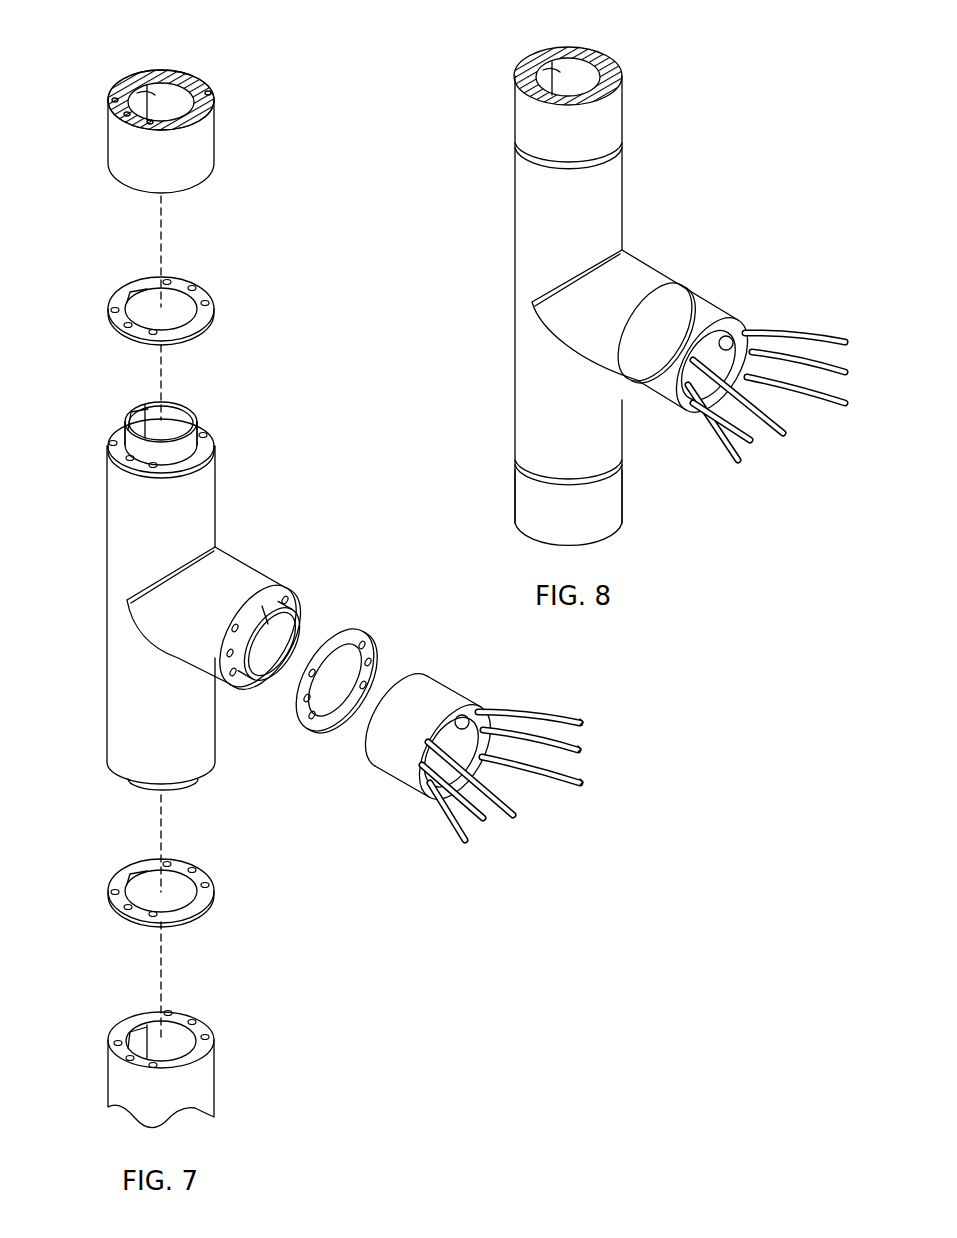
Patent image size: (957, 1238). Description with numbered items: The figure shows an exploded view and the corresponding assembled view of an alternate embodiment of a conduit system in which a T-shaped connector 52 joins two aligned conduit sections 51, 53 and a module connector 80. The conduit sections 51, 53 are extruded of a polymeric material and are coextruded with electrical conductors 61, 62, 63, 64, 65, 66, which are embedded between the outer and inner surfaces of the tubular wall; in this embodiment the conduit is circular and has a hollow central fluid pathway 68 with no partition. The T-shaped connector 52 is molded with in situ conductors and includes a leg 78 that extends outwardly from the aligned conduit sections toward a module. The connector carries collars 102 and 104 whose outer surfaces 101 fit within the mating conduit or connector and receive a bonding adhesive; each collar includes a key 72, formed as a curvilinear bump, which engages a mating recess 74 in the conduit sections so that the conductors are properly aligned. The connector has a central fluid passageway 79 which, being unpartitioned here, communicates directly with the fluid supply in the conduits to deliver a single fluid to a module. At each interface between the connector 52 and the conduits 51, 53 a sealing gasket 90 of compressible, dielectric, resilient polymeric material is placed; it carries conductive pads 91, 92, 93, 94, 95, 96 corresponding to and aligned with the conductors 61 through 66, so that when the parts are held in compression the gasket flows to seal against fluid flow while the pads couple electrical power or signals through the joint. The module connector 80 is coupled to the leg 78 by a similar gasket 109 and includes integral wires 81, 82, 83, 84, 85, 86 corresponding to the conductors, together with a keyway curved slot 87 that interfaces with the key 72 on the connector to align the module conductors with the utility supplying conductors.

In FIG. 7, the conduit section 51 is at (208, 1078).
In FIG. 8, the conduit section 51 is at (525, 505).
In FIG. 7, the T-shaped connector 52 is at (220, 517).
In FIG. 8, the T-shaped connector 52 is at (623, 213).
In FIG. 7, the conduit section 53 is at (200, 152).
In FIG. 8, the conduit section 53 is at (608, 118).
In FIG. 7, the electrical conductor 61 is at (178, 78).
In FIG. 7, the electrical conductor 62 is at (195, 80).
In FIG. 7, the electrical conductor 63 is at (210, 92).
In FIG. 7, the electrical conductor 64 is at (135, 120).
In FIG. 7, the electrical conductor 65 is at (125, 112).
In FIG. 7, the electrical conductor 66 is at (115, 98).
In FIG. 7, the hollow central fluid pathway 68 is at (185, 72).
In FIG. 8, the hollow central fluid pathway 68 is at (587, 82).
In FIG. 7, the keyway 72 is at (128, 410).
In FIG. 7, the mating recess 74 is at (142, 78).
In FIG. 8, the mating recess 74 is at (553, 50).
In FIG. 7, the leg 78 is at (185, 633).
In FIG. 8, the leg 78 is at (610, 335).
In FIG. 7, the central fluid passageway 79 is at (163, 412).
In FIG. 8, the central fluid passageway 79 is at (580, 77).
In FIG. 7, the module connector 80 is at (410, 765).
In FIG. 8, the module connector 80 is at (668, 382).
In FIG. 7, the integral wire 81 is at (540, 715).
In FIG. 8, the integral wire 81 is at (808, 332).
In FIG. 7, the integral wire 82 is at (545, 760).
In FIG. 8, the integral wire 82 is at (813, 372).
In FIG. 7, the integral wire 83 is at (560, 775).
In FIG. 8, the integral wire 83 is at (825, 403).
In FIG. 7, the integral wire 84 is at (455, 835).
In FIG. 8, the integral wire 84 is at (723, 455).
In FIG. 7, the integral wire 85 is at (470, 805).
In FIG. 8, the integral wire 85 is at (715, 430).
In FIG. 7, the integral wire 86 is at (497, 818).
In FIG. 8, the integral wire 86 is at (762, 435).
In FIG. 7, the keyway curved slot 87 is at (463, 712).
In FIG. 8, the keyway curved slot 87 is at (727, 336).
In FIG. 7, the sealing gasket 90 is at (115, 292).
In FIG. 8, the sealing gasket 90 is at (520, 158).
In FIG. 7, the conductive pad 91 is at (170, 278).
In FIG. 7, the conductive pad 92 is at (200, 285).
In FIG. 7, the conductive pad 93 is at (212, 302).
In FIG. 7, the conductive pad 94 is at (142, 330).
In FIG. 7, the conductive pad 95 is at (120, 320).
In FIG. 7, the conductive pad 96 is at (110, 306).
In FIG. 7, the outer surface of collar 101 is at (178, 450).
In FIG. 7, the collar 102 is at (198, 420).
In FIG. 7, the collar 104 is at (300, 625).
In FIG. 7, the gasket 109 is at (370, 640).
In FIG. 8, the gasket 109 is at (673, 287).